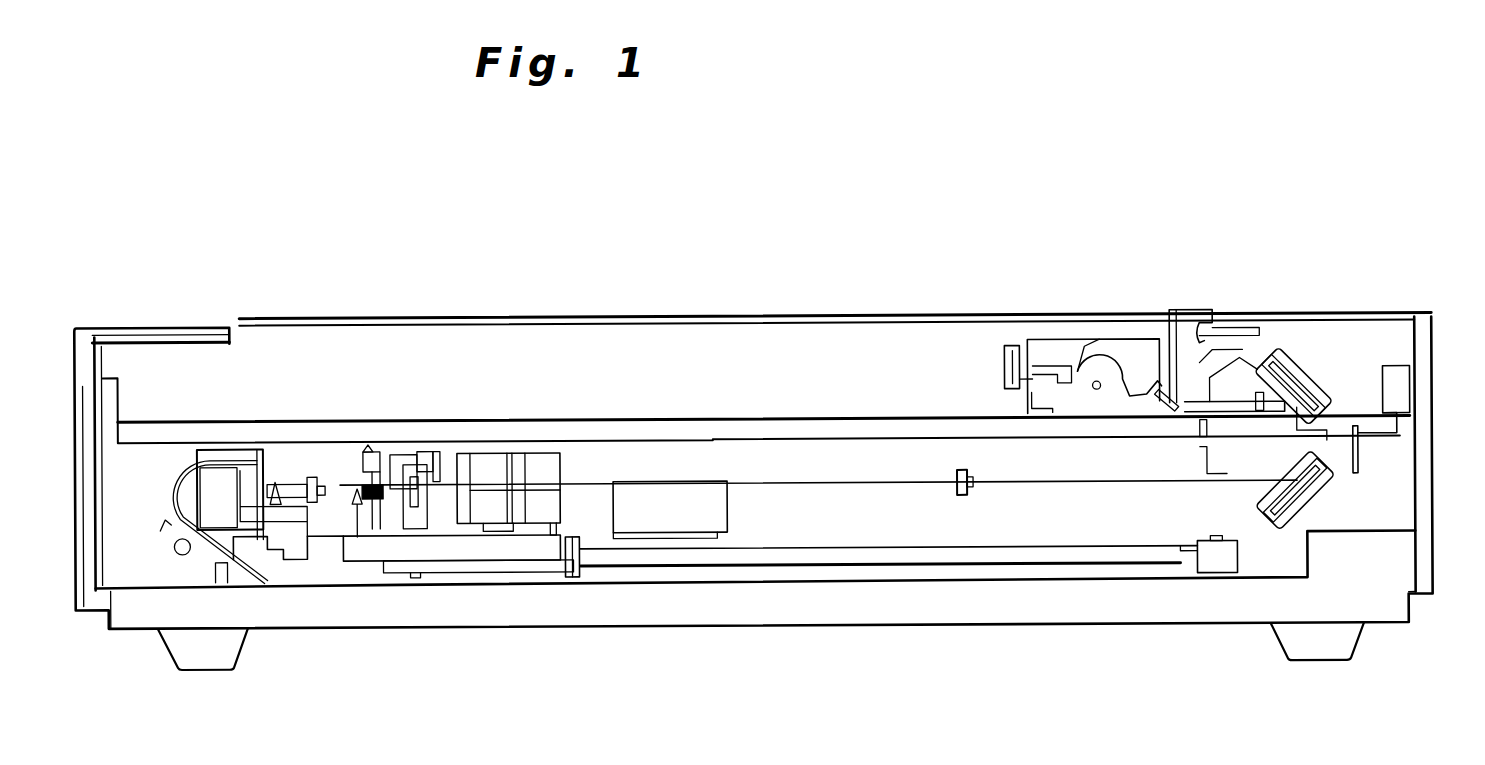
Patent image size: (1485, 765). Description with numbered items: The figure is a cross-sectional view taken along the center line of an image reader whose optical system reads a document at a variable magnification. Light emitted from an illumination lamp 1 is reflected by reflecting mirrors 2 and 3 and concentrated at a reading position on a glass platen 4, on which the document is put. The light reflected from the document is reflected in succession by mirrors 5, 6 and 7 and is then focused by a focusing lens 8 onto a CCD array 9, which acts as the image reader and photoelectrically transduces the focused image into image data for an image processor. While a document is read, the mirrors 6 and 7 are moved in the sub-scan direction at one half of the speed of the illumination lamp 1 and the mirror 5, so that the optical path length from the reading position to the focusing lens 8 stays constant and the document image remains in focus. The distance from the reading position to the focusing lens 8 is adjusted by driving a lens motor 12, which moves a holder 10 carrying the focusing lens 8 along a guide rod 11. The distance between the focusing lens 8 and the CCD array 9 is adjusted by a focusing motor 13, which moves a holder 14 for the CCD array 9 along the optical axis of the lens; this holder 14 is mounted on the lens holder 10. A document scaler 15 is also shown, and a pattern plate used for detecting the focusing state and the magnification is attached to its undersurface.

The illumination lamp 1 is at (1115, 349).
The reflecting mirror 2 is at (1078, 370).
The reflecting mirror 3 is at (1218, 320).
The glass platen 4 is at (930, 318).
The mirror 5 is at (1164, 394).
The mirror 6 is at (1290, 358).
The mirror 7 is at (1330, 466).
The focusing lens 8 is at (548, 466).
The CCD array 9 is at (437, 447).
The holder 10 is at (537, 544).
The guide rod 11 is at (660, 552).
The lens motor 12 is at (714, 511).
The focusing motor 13 is at (207, 452).
The holder 14 is at (385, 445).
The document scaler 15 is at (1200, 327).